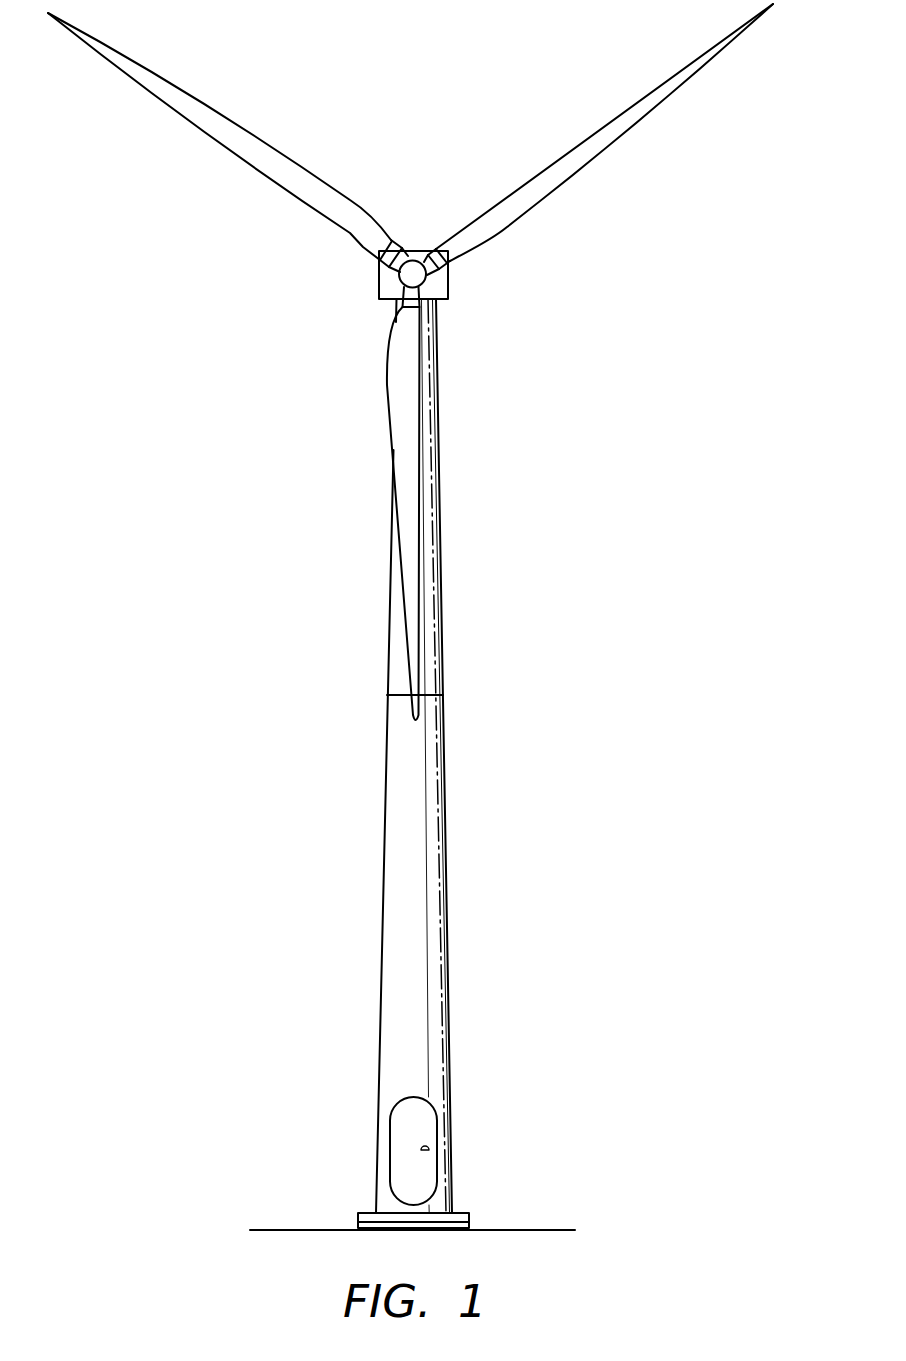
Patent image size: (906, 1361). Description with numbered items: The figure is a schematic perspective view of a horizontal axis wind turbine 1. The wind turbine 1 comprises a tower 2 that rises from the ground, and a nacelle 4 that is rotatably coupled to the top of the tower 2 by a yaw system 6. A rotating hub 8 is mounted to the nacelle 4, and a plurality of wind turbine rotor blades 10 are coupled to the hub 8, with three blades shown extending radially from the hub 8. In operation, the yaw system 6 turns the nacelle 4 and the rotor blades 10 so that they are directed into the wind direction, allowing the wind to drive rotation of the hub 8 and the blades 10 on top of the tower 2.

The wind turbine 1 is at (145, 395).
The tower 2 is at (447, 883).
The nacelle 4 is at (411, 250).
The yaw system 6 is at (442, 301).
The rotating hub 8 is at (418, 278).
The wind turbine rotor blades 10 is at (293, 174).